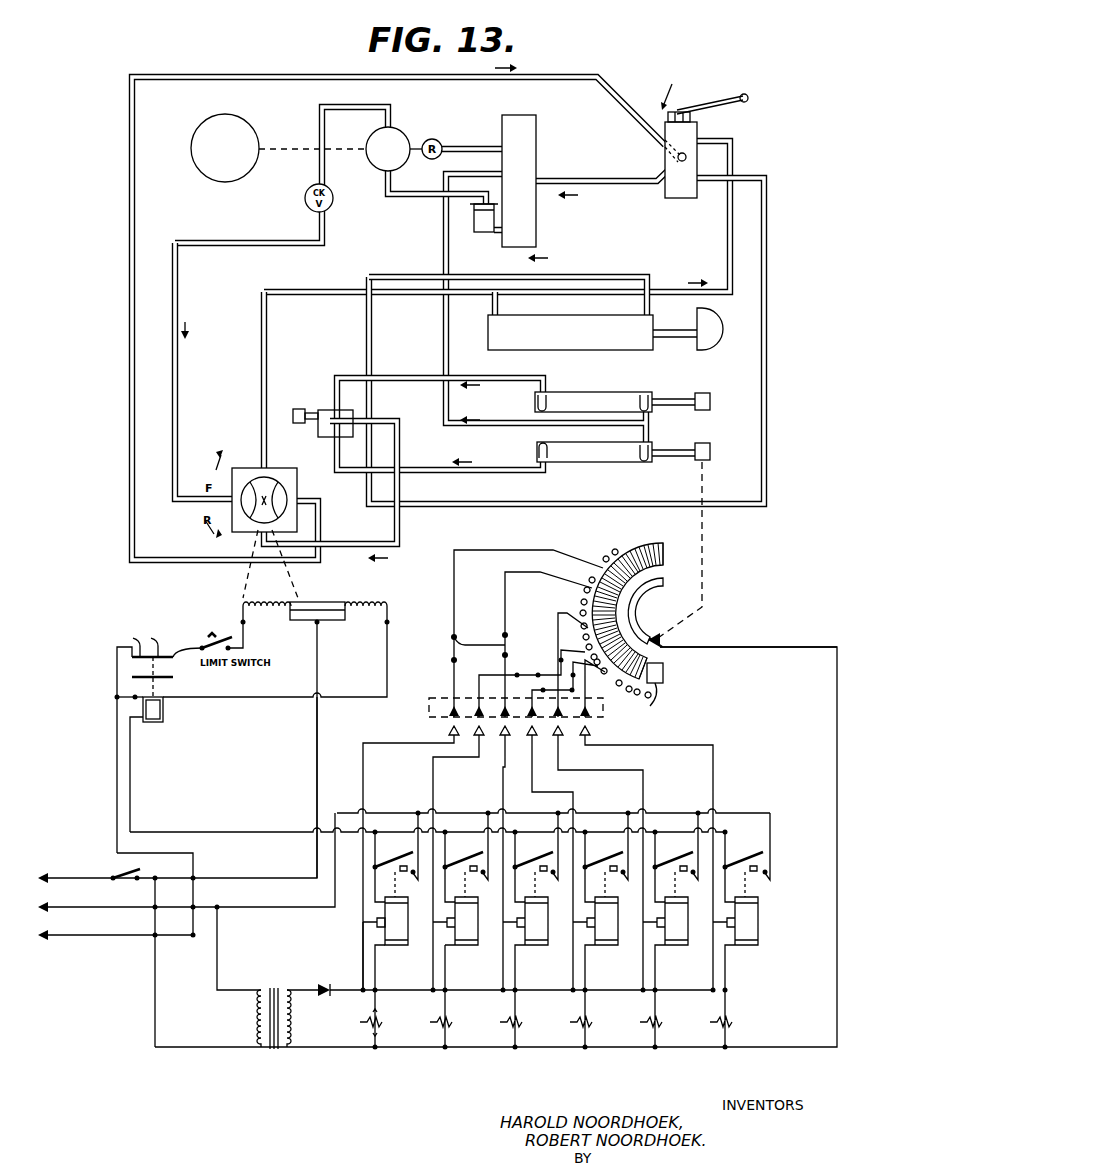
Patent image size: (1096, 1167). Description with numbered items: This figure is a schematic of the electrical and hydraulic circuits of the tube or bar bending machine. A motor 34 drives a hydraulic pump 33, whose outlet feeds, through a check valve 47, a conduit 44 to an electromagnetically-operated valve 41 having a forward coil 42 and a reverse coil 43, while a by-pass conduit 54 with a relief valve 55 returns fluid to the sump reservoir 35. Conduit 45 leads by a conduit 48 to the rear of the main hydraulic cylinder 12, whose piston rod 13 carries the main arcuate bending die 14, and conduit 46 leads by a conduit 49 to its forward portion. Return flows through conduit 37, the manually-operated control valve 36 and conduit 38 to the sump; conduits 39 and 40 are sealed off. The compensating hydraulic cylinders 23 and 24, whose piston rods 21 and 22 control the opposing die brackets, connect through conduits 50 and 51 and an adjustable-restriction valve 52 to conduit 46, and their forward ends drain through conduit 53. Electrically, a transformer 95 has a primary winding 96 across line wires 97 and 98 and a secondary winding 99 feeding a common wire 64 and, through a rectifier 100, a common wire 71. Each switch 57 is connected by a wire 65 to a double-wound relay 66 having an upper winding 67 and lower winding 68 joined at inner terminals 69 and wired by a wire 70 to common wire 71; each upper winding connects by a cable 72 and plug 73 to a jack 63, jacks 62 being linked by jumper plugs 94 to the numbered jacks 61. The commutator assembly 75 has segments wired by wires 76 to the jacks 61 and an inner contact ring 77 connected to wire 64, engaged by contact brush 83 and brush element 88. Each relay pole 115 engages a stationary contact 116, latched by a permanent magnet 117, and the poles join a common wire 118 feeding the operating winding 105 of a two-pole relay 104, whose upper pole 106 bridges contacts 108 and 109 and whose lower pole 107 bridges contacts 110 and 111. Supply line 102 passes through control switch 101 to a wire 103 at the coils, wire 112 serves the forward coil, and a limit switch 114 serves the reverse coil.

The main hydraulic cylinder 12 is at (488, 348).
The piston rod 13 is at (676, 328).
The main arcuate bending die 14 is at (708, 338).
The piston rod 21 is at (666, 450).
The piston rod 22 is at (664, 398).
The hydraulic cylinder 23 is at (590, 462).
The hydraulic cylinder 24 is at (598, 392).
The hydraulic pump 33 is at (378, 170).
The motor 34 is at (230, 181).
The sump reservoir 35 is at (538, 138).
The manually-operated control valve 36 is at (682, 198).
The conduit 37 is at (625, 108).
The conduit 38 is at (610, 196).
The conduit 39 is at (497, 235).
The conduit 40 is at (768, 226).
The electromagnetically-operated valve 41 is at (242, 472).
The forward coil 42 is at (378, 604).
The reverse coil 43 is at (264, 602).
The conduit 44 is at (178, 472).
The conduit 45 is at (268, 378).
The conduit 46 is at (356, 546).
The check valve 47 is at (327, 214).
The conduit 48 is at (492, 306).
The conduit 49 is at (646, 272).
The conduit 50 is at (412, 472).
The conduit 51 is at (398, 378).
The adjustable-restriction valve 52 is at (326, 438).
The conduit 53 is at (486, 425).
The by-pass conduit 54 is at (462, 142).
The relief valve 55 is at (432, 139).
The switch 57 is at (380, 1010).
The jacks 61 is at (450, 634).
The jacks 62 is at (450, 662).
The jacks 63 is at (458, 704).
The common wire 64 is at (410, 1050).
The wire 65 is at (380, 986).
The double-wound relay 66 is at (418, 940).
The upper winding 67 is at (408, 918).
The lower winding 68 is at (390, 936).
The connected inner terminals 69 is at (376, 922).
The wire 70 is at (362, 946).
The common wire 71 is at (472, 988).
The cable 72 is at (362, 796).
The plug 73 is at (432, 736).
The commutator assembly 75 is at (646, 546).
The wire 76 is at (512, 550).
The contact ring 77 is at (636, 614).
The contact brush 83 is at (664, 645).
The brush element 88 is at (648, 706).
The plug 94 is at (479, 635).
The transformer 95 is at (273, 1048).
The primary winding 96 is at (256, 1018).
The line wire 97 is at (100, 905).
The line wire 98 is at (112, 938).
The secondary winding 99 is at (290, 1018).
The rectifier 100 is at (322, 982).
The control switch 101 is at (110, 872).
The supply line 102 is at (75, 870).
The wire 103 is at (312, 745).
The two-pole relay 104 is at (160, 725).
The operating winding 105 is at (153, 726).
The upper pole 106 is at (152, 638).
The lower pole 107 is at (173, 677).
The contact 108 is at (133, 638).
The contact 109 is at (180, 636).
The contact 110 is at (130, 694).
The contact 111 is at (163, 700).
The wire 112 is at (270, 700).
The limit switch 114 is at (210, 636).
The pole 115 is at (386, 862).
The stationary contact 116 is at (398, 872).
The permanent magnet 117 is at (398, 870).
The common wire 118 is at (262, 832).